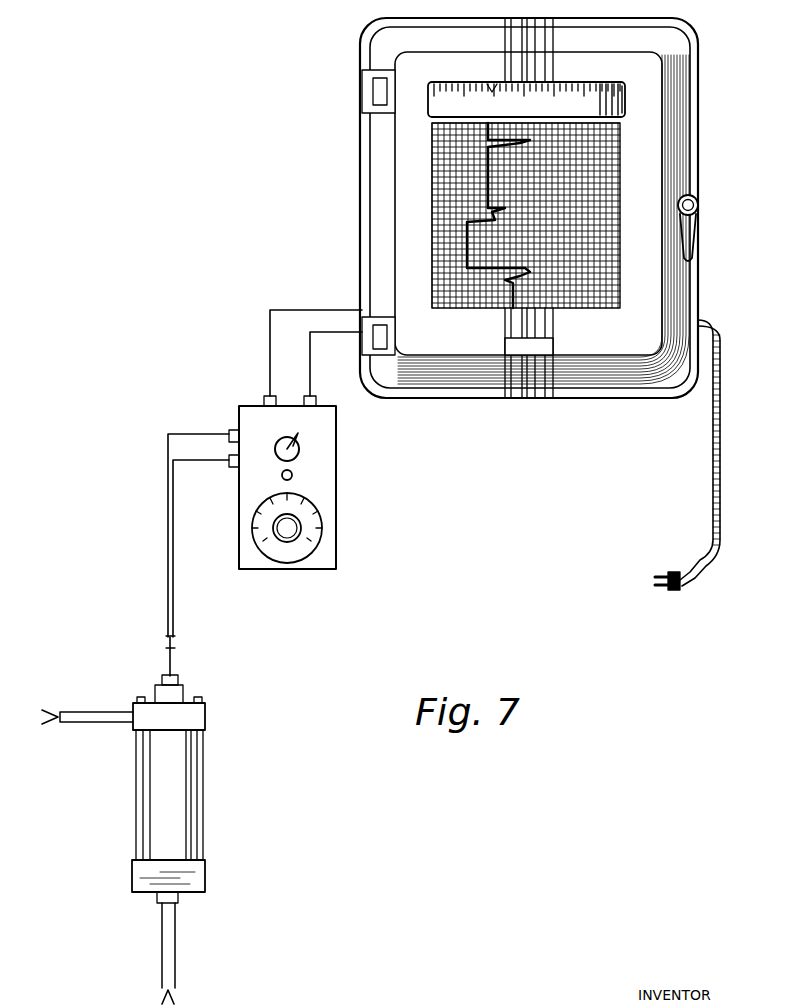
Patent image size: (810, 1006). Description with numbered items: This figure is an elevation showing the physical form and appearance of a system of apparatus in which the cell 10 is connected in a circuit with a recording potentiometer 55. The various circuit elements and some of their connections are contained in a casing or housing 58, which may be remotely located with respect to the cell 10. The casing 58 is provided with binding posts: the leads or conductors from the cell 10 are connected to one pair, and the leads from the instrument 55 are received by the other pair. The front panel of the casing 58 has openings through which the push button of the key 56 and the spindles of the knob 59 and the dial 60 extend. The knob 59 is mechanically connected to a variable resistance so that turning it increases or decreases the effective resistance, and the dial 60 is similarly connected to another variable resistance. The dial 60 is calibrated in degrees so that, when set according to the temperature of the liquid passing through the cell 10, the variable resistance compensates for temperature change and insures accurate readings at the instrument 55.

The cell 10 is at (168, 791).
The recording potentiometer 55 is at (362, 210).
The key 56 is at (293, 475).
The casing 58 is at (328, 502).
The knob 59 is at (290, 447).
The dial 60 is at (302, 548).